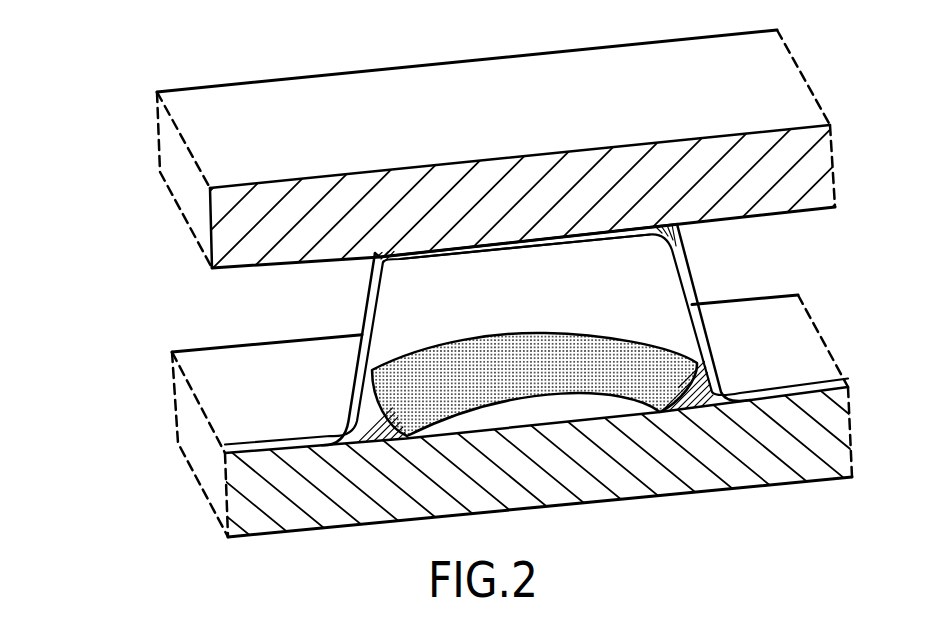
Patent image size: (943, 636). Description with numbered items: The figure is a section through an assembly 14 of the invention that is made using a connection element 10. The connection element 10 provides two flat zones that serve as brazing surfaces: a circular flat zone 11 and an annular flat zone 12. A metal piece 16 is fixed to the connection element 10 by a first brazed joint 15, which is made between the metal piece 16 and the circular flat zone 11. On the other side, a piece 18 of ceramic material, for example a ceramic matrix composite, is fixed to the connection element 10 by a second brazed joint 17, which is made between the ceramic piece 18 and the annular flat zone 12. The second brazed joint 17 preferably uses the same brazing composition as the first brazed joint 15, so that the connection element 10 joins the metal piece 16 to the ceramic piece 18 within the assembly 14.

The connection element 10 is at (350, 315).
The circular flat zone 11 is at (522, 250).
The annular flat zone 12 is at (200, 406).
The assembly 14 is at (98, 196).
The first brazed joint 15 is at (678, 240).
The metal piece 16 is at (822, 162).
The second brazed joint 17 is at (420, 374).
The piece of ceramic material 18 is at (826, 435).